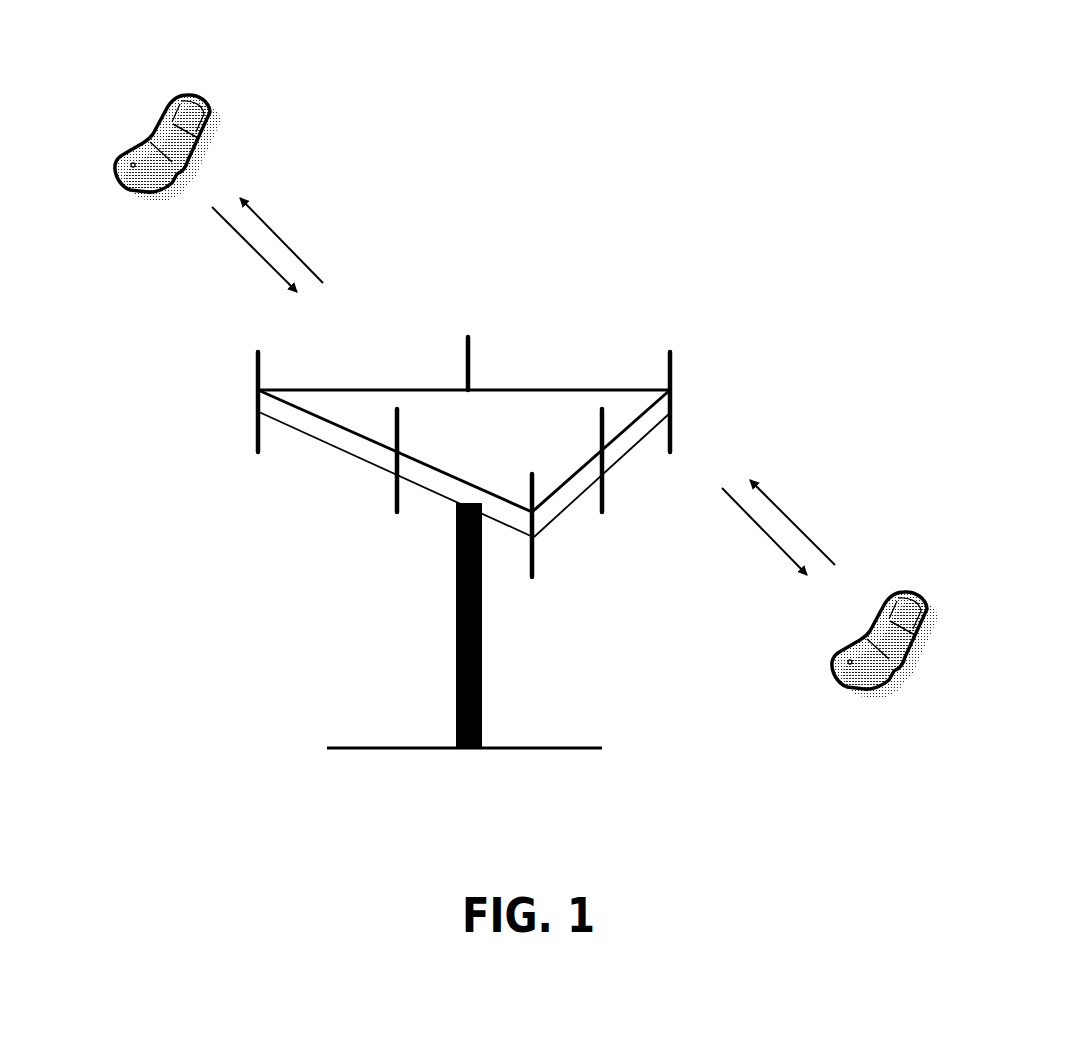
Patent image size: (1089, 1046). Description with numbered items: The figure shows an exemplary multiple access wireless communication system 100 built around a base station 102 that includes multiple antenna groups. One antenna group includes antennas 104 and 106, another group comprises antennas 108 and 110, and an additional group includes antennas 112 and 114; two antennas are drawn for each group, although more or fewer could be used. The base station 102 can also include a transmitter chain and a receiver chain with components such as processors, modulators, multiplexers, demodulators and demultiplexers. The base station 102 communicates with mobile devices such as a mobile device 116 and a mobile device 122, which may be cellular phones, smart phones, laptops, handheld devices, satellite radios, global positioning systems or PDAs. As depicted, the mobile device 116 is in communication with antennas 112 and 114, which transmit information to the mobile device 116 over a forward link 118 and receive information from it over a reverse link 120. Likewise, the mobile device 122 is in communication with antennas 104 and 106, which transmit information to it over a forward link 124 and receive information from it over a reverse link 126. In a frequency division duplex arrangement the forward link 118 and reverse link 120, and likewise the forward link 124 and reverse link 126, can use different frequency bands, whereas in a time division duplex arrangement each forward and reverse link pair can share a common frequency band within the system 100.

The wireless communication system 100 is at (973, 170).
The base station 102 is at (482, 748).
The antenna 104 is at (670, 352).
The antenna 106 is at (602, 485).
The antenna 108 is at (532, 552).
The antenna 110 is at (397, 508).
The antenna 112 is at (258, 352).
The antenna 114 is at (468, 350).
The mobile device 116 is at (175, 96).
The forward link 118 is at (280, 234).
The reverse link 120 is at (268, 268).
The mobile device 122 is at (890, 592).
The forward link 124 is at (775, 547).
The reverse link 126 is at (784, 509).